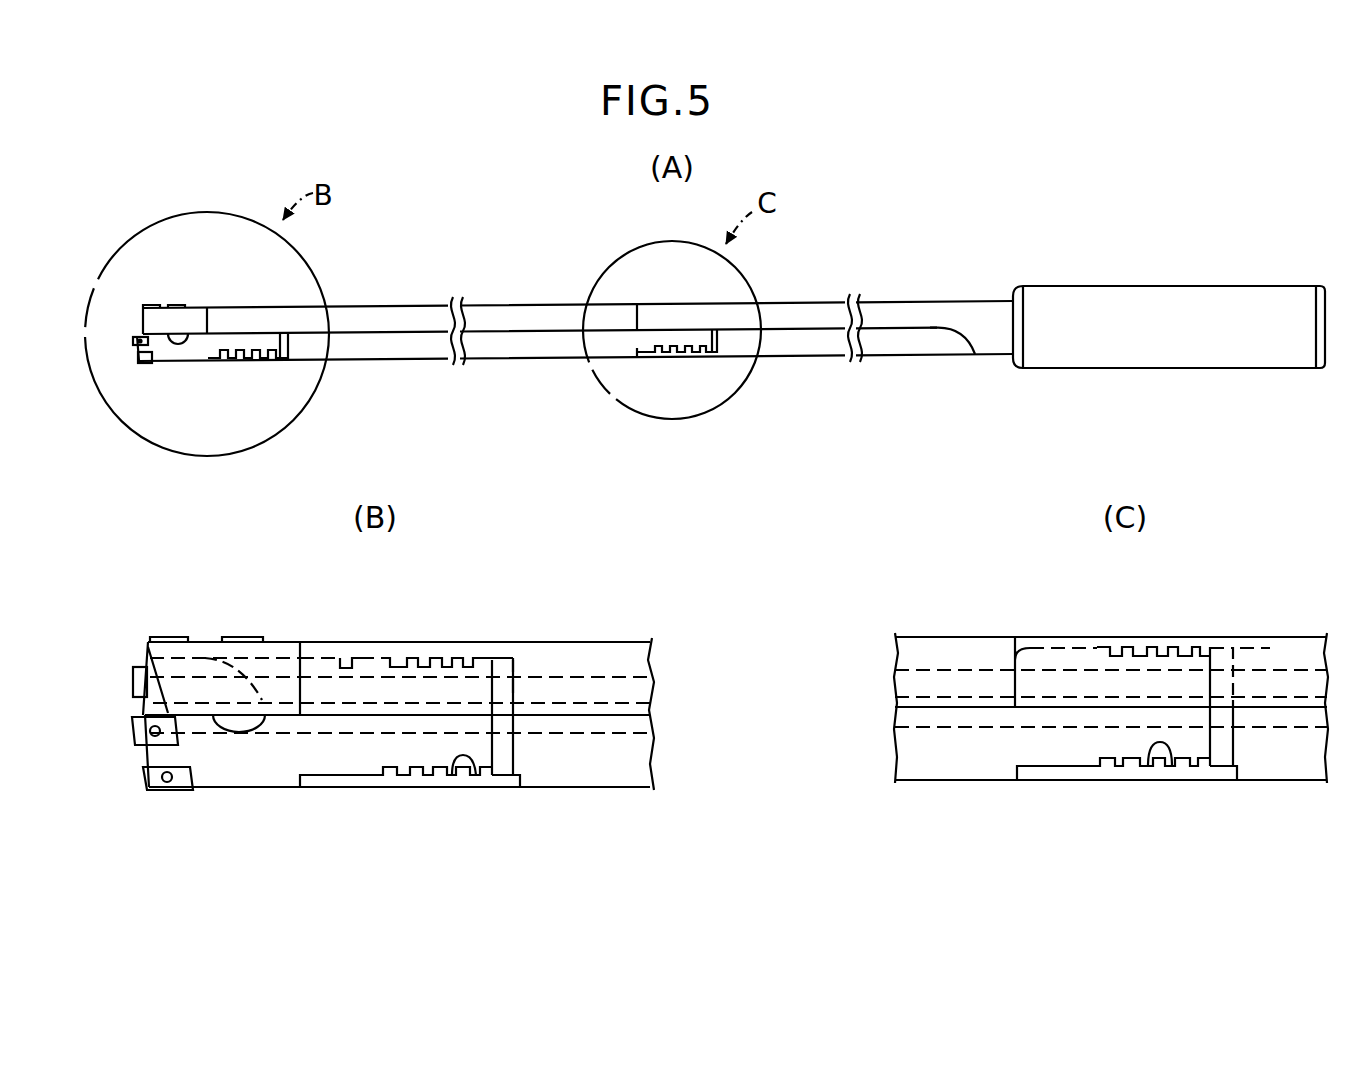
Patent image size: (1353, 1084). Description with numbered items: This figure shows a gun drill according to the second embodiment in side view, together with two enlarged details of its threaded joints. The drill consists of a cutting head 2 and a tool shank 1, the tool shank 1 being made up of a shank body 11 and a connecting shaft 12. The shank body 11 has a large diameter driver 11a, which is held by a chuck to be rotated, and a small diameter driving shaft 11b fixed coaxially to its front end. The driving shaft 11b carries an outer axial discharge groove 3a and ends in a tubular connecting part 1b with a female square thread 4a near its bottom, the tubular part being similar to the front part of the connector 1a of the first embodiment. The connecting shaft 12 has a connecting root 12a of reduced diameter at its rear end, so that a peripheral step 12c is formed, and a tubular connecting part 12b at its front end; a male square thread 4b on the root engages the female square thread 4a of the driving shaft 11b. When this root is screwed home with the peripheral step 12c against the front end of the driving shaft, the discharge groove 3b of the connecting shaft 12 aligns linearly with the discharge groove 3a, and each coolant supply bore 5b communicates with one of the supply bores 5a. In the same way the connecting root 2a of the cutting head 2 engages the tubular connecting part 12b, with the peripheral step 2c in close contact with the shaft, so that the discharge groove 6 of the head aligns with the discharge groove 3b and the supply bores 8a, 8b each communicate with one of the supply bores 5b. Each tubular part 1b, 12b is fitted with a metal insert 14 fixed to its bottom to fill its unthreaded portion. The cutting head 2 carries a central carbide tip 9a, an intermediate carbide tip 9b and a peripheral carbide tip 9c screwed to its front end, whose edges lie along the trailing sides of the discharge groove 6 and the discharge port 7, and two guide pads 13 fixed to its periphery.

The tool shank 1 is at (1118, 278).
The connector 1a is at (357, 660).
The tubular connecting part 1b is at (662, 320).
The cutting head 2 is at (197, 298).
The connecting root 2a is at (245, 343).
The peripheral step 2c is at (300, 668).
The discharge groove 3a is at (820, 345).
The discharge groove 3b is at (523, 343).
The female square thread 4a is at (470, 773).
The male square thread 4b is at (425, 778).
The coolant supply bore 5a is at (1275, 705).
The coolant supply bore 5b is at (602, 708).
The discharge groove 6 is at (178, 357).
The discharge port 7 is at (242, 725).
The supply bore 8a is at (367, 685).
The supply bore 8b is at (432, 728).
The central carbide tip 9a is at (132, 730).
The intermediate carbide tip 9b is at (132, 686).
The peripheral carbide tip 9c is at (170, 788).
The shank body 11 is at (1050, 287).
The driver 11a is at (1158, 347).
The driving shaft 11b is at (893, 313).
The connecting shaft 12 is at (500, 294).
The connecting root 12a is at (653, 340).
The tubular connecting part 12b is at (233, 317).
The peripheral step 12c is at (1015, 655).
The guide pad 13 is at (230, 640).
The metal insert 14 is at (505, 770).